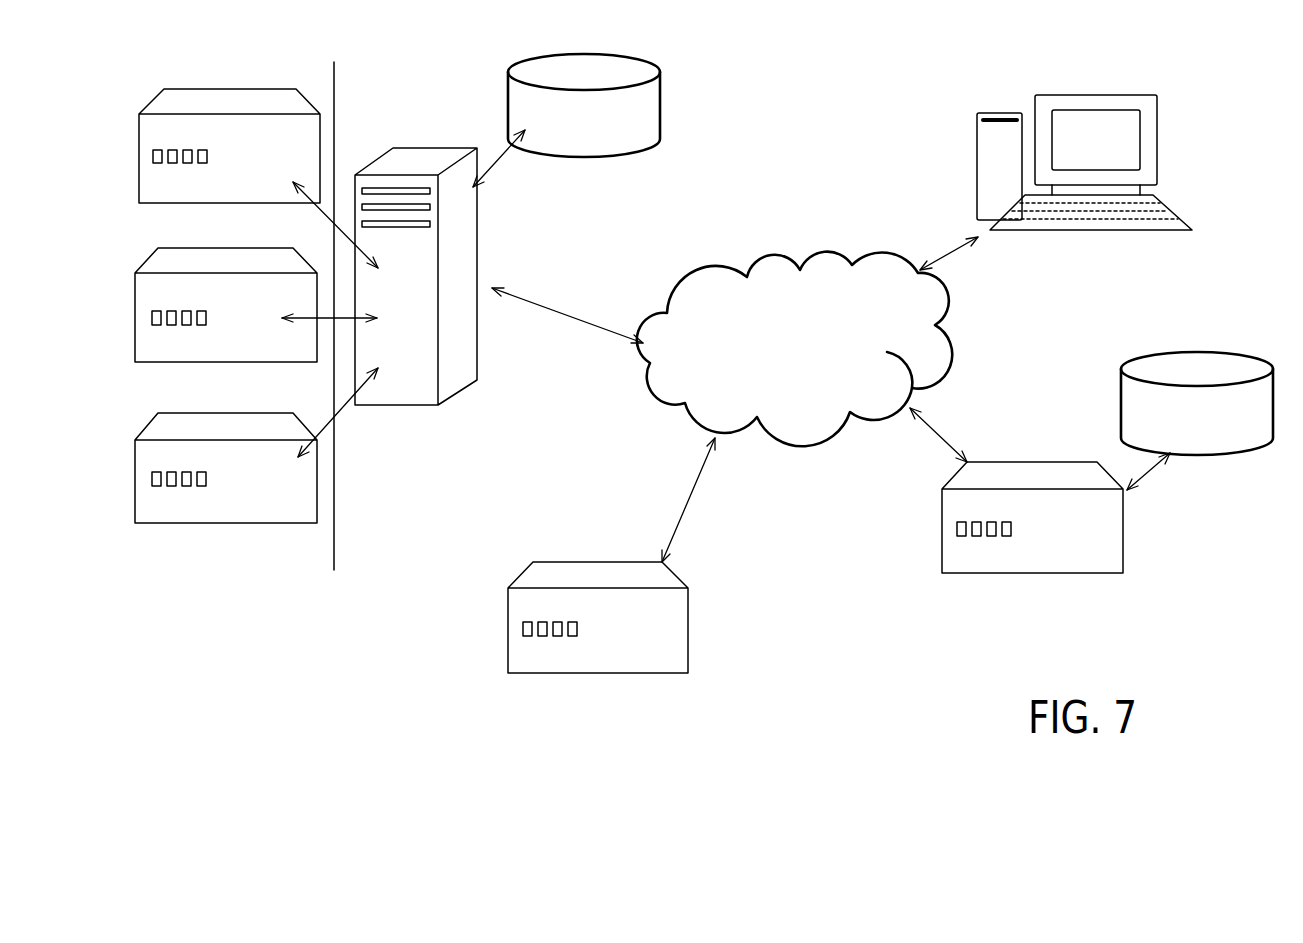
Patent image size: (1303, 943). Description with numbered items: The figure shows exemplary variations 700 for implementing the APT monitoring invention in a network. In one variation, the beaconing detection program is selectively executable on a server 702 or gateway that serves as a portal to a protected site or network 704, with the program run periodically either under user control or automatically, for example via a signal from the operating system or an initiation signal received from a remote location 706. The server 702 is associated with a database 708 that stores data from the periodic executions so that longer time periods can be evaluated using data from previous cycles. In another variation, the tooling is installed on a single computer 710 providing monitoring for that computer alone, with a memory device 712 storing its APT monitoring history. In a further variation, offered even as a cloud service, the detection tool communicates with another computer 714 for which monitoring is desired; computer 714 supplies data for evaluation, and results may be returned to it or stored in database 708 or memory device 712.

The exemplary variations 700 is at (707, 384).
The server 702 is at (465, 352).
The protected site or network 704 is at (340, 98).
The remote location 706 is at (525, 662).
The database 708 is at (647, 128).
The single computer 710 is at (970, 570).
The memory device 712 is at (1200, 350).
The remote computer 714 is at (1010, 118).